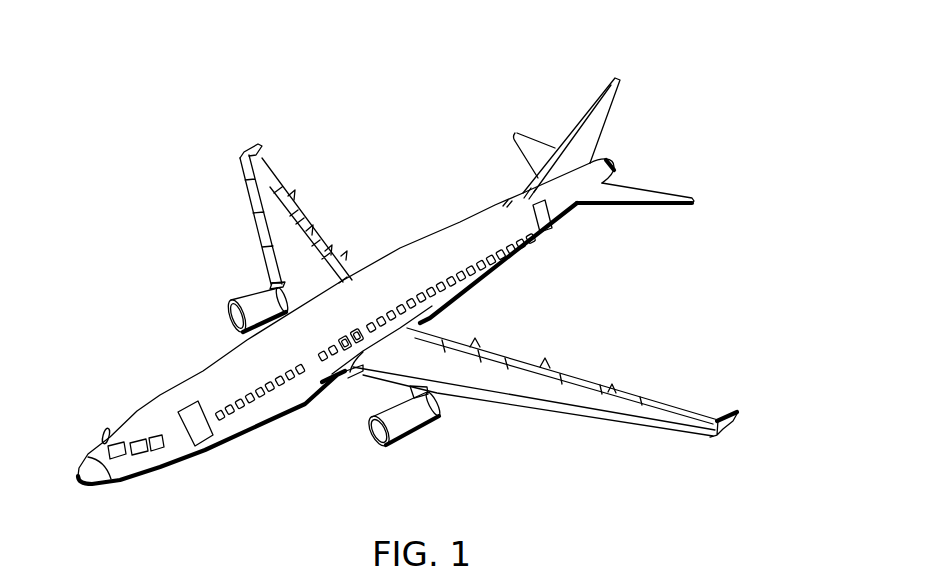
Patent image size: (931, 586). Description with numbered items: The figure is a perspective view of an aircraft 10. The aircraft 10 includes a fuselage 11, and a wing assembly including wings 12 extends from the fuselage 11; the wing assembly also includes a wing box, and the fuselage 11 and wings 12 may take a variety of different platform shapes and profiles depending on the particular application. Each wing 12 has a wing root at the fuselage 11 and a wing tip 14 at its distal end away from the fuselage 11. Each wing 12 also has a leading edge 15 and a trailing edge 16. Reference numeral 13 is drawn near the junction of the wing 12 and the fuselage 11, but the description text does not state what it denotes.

The aircraft 10 is at (439, 266).
The fuselage 11 is at (400, 262).
The wing 12 is at (473, 313).
The wing root / belly fairing 13 is at (357, 370).
The wing tip 14 is at (720, 417).
The leading edge 15 is at (255, 213).
The trailing edge 16 is at (331, 252).